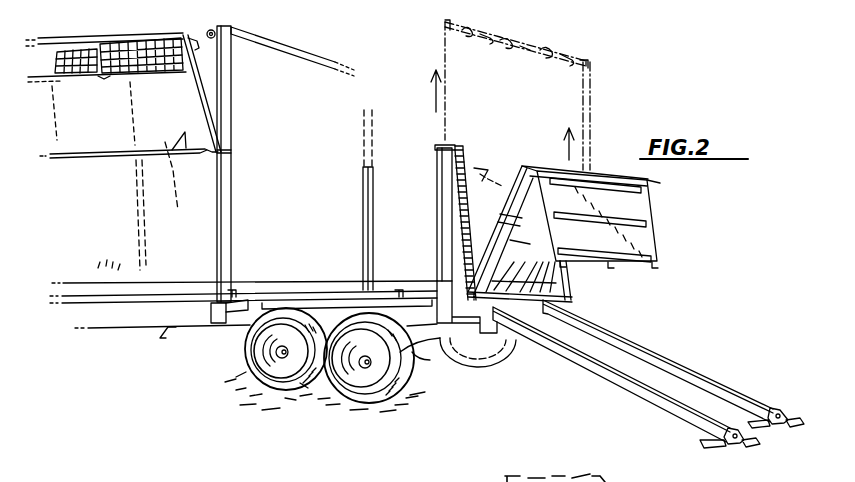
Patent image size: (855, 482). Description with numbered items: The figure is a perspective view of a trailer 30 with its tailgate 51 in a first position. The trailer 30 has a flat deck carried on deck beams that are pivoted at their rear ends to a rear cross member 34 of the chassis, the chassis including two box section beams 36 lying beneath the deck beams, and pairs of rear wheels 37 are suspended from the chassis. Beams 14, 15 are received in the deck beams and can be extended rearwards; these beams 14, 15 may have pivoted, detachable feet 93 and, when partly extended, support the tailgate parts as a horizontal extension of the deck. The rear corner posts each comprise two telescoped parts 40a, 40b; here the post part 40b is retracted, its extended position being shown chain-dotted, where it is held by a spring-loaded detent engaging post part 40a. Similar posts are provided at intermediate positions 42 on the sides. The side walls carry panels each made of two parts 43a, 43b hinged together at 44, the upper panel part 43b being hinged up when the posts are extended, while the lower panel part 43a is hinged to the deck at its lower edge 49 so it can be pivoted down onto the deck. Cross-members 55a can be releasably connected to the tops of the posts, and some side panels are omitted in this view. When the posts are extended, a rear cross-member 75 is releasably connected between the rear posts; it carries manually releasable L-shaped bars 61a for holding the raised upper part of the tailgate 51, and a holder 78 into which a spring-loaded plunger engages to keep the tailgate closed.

The beam 14 is at (658, 412).
The beam 15 is at (698, 378).
The trailer 30 is at (189, 357).
The rear cross member 34 is at (506, 348).
The box section beam 36 is at (440, 350).
The rear wheels 37 is at (240, 414).
The post part 40a is at (437, 232).
The post part 40b is at (595, 113).
The intermediate post 42 is at (231, 219).
The panel part 43a is at (122, 201).
The panel part 43b is at (123, 92).
The hinge 44 is at (108, 155).
The lower edge 49 is at (170, 283).
The tailgate 51 is at (626, 296).
The cross-member 55a is at (292, 48).
The L-shaped bar 61a is at (560, 66).
The rear cross-member 75 is at (504, 52).
The holder 78 is at (522, 42).
The feet 93 is at (738, 448).